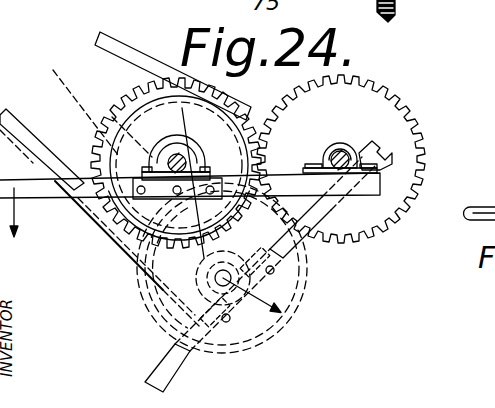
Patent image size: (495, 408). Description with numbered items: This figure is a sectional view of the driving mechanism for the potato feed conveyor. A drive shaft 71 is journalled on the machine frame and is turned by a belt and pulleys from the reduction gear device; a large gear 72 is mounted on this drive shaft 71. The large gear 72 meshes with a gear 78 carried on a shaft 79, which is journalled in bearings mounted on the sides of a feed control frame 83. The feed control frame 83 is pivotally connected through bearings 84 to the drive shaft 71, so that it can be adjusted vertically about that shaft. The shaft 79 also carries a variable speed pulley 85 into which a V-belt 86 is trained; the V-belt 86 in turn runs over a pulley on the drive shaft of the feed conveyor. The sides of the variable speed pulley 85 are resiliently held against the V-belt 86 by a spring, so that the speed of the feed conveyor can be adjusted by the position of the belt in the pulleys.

The drive shaft 71 is at (341, 151).
The large gear 72 is at (381, 110).
The gear 78 is at (125, 90).
The shaft 79 is at (176, 154).
The feed control frame 83 is at (43, 194).
The bearings 84 is at (334, 152).
The variable speed pulley 85 is at (85, 140).
The V-belt 86 is at (128, 52).